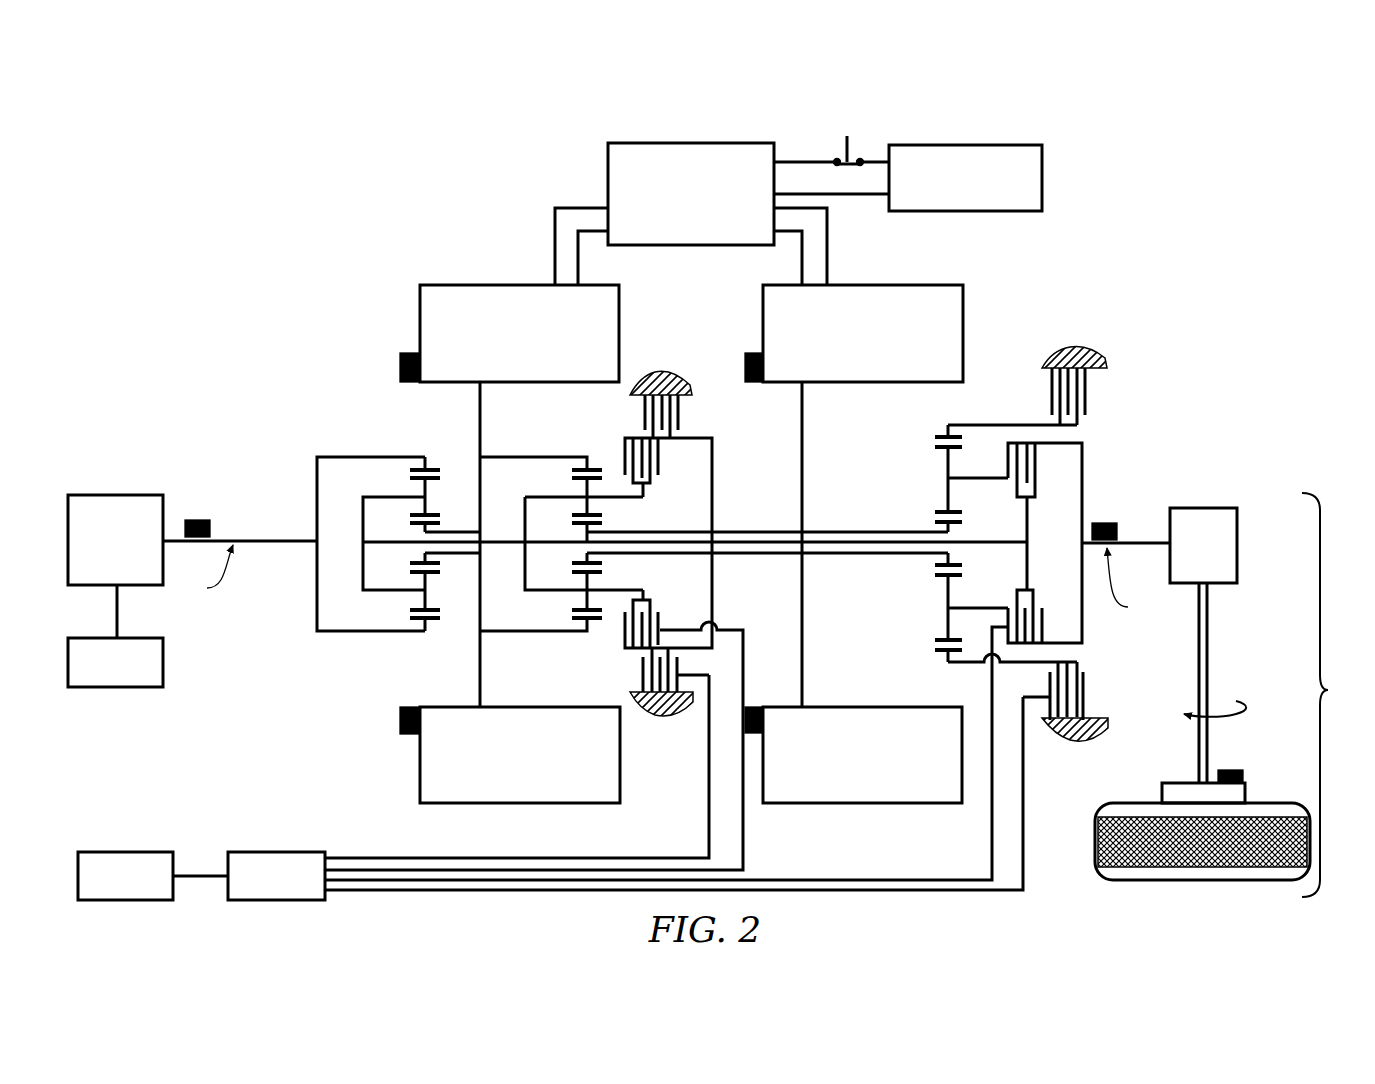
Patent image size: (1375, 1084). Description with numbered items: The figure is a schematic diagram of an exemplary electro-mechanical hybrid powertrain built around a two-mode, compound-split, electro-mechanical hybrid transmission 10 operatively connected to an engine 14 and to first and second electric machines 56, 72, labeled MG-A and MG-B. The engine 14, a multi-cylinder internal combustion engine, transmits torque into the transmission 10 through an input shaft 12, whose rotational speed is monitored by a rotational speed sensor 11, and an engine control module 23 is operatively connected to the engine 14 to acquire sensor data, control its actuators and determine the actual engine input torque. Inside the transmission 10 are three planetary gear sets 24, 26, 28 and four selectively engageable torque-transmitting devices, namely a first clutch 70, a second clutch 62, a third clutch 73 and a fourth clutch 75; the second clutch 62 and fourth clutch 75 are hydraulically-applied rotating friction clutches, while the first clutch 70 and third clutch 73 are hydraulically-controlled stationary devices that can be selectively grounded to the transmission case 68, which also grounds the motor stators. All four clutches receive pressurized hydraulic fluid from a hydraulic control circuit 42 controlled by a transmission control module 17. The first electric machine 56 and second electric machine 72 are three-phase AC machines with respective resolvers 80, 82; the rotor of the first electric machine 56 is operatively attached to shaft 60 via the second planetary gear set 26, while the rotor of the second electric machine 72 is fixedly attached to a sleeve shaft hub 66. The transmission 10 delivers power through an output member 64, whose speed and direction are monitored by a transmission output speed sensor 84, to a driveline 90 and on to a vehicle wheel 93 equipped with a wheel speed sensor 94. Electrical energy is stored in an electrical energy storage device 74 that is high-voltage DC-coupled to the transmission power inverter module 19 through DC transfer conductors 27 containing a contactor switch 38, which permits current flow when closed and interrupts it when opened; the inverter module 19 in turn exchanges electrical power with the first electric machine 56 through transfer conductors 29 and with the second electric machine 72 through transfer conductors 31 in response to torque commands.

The electro-mechanical hybrid transmission 10 is at (383, 250).
The rotational speed sensor 11 is at (197, 520).
The input shaft 12 is at (278, 540).
The engine 14 is at (122, 495).
The transmission control module 17 is at (118, 852).
The transmission power inverter module 19 is at (608, 160).
The engine control module 23 is at (160, 677).
The first planetary gear set 24 is at (410, 452).
The second planetary gear set 26 is at (580, 452).
The DC transfer conductors 27 is at (790, 160).
The third planetary gear set 28 is at (938, 430).
The transfer conductors 29 is at (555, 247).
The transfer conductors 31 is at (827, 232).
The contactor switch 38 is at (848, 136).
The hydraulic control circuit 42 is at (243, 852).
The first electric machine 56 is at (420, 318).
The shaft 60 is at (1000, 542).
The clutch C2 62 is at (1042, 465).
The output member 64 is at (1140, 543).
The sleeve shaft hub 66 is at (840, 532).
The transmission case 68 is at (668, 372).
The clutch C1 70 is at (1042, 388).
The second electric machine 72 is at (963, 300).
The clutch C3 73 is at (683, 420).
The electrical energy storage device 74 is at (1042, 163).
The clutch C4 75 is at (660, 483).
The resolver 80 is at (400, 367).
The resolver 82 is at (752, 353).
The transmission output speed sensor 84 is at (1105, 522).
The driveline 90 is at (1226, 695).
The vehicle wheel 93 is at (1162, 795).
The wheel speed sensor 94 is at (1232, 770).